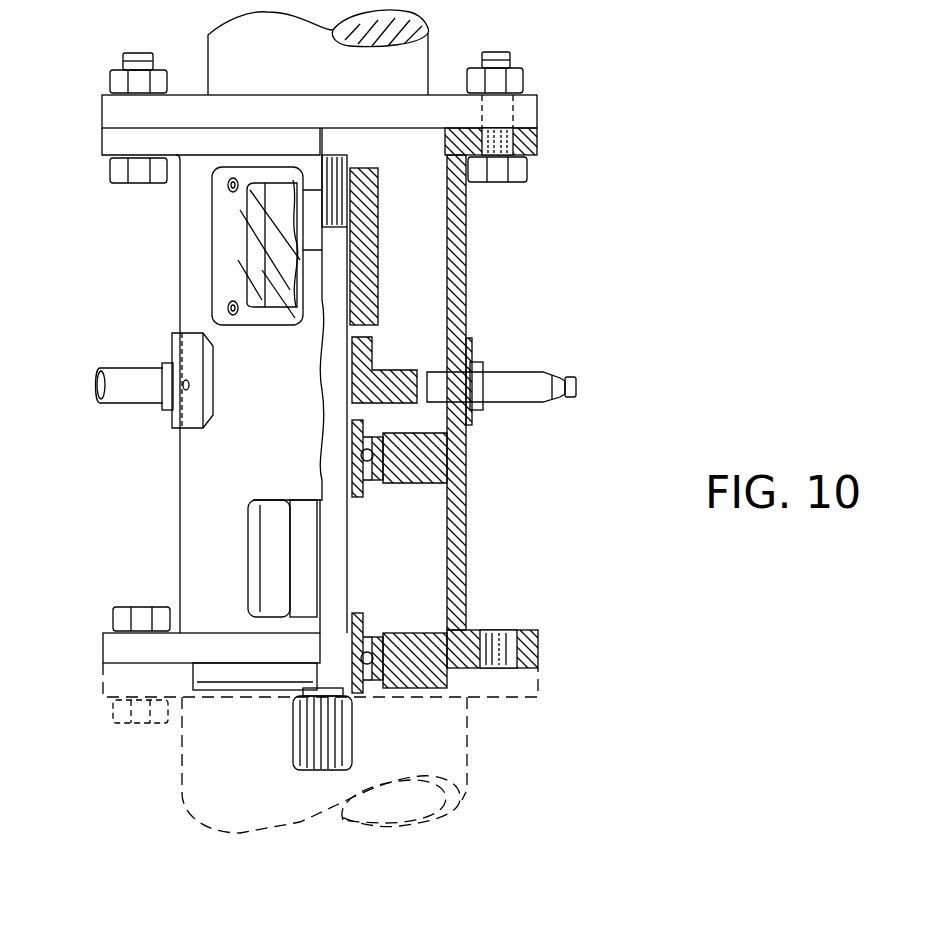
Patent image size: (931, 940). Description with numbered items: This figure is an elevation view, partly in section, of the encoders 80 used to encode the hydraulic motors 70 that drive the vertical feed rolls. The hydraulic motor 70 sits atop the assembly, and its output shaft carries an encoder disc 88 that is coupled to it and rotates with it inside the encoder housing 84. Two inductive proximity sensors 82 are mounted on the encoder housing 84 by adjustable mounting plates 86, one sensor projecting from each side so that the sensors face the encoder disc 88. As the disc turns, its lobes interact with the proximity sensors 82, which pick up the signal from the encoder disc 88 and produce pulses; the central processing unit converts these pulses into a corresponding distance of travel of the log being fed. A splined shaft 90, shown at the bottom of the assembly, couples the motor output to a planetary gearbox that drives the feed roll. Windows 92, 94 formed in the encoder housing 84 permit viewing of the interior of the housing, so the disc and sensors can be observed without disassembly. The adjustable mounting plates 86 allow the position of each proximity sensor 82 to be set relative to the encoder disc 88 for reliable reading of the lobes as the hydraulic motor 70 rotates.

The hydraulic motor 70 is at (206, 36).
The encoder 80 is at (536, 261).
The inductive proximity sensor 82 is at (130, 364).
The encoder housing 84 is at (215, 460).
The adjustable mounting plate 86 is at (170, 423).
The encoder disc 88 is at (403, 355).
The splined shaft 90 is at (297, 728).
The window 92 is at (231, 229).
The window 94 is at (262, 540).